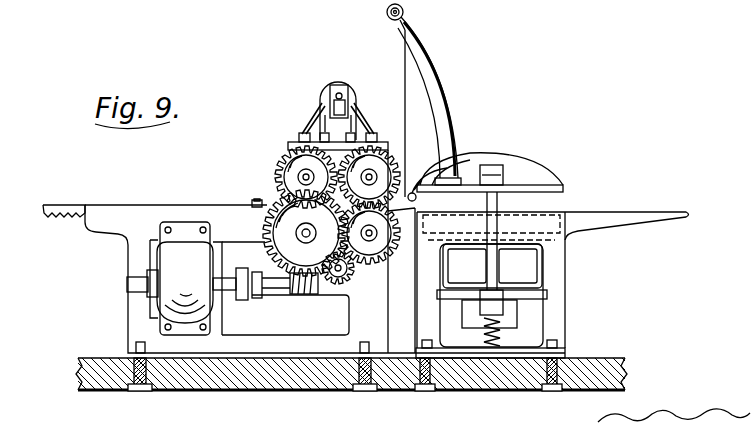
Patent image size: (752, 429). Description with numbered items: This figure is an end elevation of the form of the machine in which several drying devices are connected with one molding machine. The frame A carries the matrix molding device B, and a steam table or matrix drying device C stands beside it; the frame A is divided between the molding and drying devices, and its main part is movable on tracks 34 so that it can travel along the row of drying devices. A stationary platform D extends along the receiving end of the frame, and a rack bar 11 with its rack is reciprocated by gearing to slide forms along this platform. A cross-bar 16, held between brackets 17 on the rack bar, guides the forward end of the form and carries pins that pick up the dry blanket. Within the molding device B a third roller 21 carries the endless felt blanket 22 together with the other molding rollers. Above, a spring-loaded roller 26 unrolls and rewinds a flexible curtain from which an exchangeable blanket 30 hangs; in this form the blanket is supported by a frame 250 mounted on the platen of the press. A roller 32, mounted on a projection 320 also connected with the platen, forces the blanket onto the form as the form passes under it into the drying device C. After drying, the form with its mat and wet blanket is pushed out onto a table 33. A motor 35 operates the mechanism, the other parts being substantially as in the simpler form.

The rack bar 11 is at (60, 206).
The stationary platform D is at (157, 206).
The brackets 17 is at (252, 203).
The cross-bar 16 is at (257, 200).
The matrix molding device B is at (288, 146).
The third roller 21 is at (328, 100).
The endless felt blanket 22 is at (315, 113).
The roller 26 is at (387, 12).
The exchangeable blanket 30 is at (405, 60).
The frame 250 is at (447, 98).
The projection 320 is at (411, 193).
The roller 32 is at (421, 200).
The steam table or matrix drying device C is at (530, 210).
The table 33 is at (646, 211).
The motor 35 is at (222, 278).
The frame A is at (128, 312).
The tracks 34 is at (365, 392).